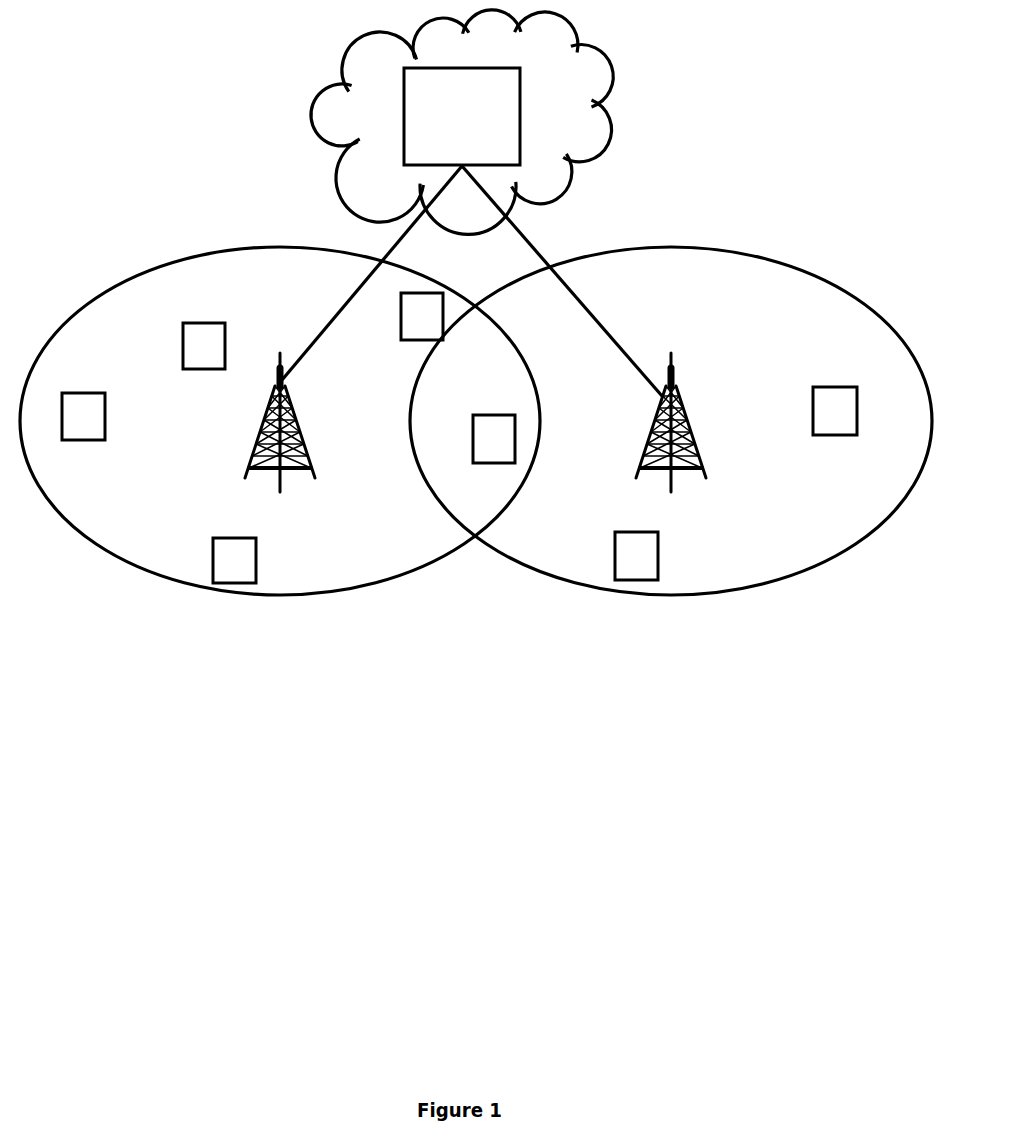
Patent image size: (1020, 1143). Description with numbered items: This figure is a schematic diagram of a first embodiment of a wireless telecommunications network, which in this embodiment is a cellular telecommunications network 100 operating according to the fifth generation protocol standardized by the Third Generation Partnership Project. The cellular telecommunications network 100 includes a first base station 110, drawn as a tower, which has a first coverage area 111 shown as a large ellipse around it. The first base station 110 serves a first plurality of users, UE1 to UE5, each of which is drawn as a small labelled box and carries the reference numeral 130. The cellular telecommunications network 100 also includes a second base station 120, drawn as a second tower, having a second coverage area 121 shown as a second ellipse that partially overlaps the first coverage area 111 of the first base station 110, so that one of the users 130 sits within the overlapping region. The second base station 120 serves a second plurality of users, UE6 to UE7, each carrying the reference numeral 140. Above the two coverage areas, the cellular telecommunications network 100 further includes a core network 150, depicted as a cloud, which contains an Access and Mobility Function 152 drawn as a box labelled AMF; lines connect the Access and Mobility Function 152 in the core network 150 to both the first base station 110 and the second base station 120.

The cellular telecommunications network 100 is at (134, 134).
The first base station 110 is at (310, 465).
The first coverage area 111 is at (213, 254).
The second base station 120 is at (700, 462).
The second coverage area 121 is at (602, 250).
The first plurality of users 130 is at (256, 546).
The second plurality of users 140 is at (615, 541).
The core network 150 is at (326, 88).
The Access and Mobility Function (AMF) 152 is at (404, 130).